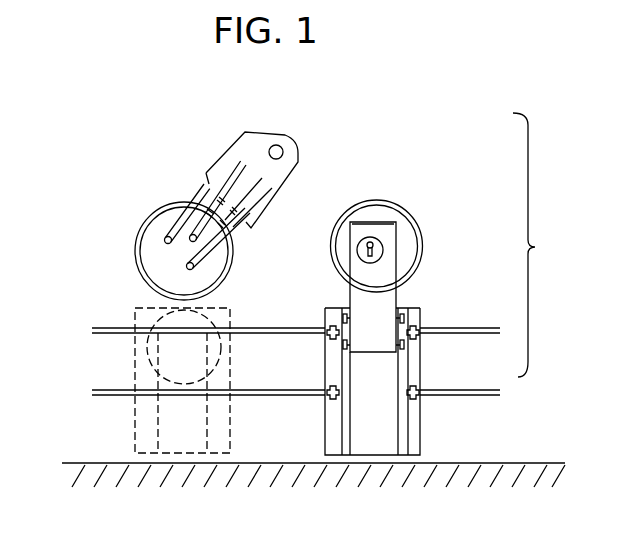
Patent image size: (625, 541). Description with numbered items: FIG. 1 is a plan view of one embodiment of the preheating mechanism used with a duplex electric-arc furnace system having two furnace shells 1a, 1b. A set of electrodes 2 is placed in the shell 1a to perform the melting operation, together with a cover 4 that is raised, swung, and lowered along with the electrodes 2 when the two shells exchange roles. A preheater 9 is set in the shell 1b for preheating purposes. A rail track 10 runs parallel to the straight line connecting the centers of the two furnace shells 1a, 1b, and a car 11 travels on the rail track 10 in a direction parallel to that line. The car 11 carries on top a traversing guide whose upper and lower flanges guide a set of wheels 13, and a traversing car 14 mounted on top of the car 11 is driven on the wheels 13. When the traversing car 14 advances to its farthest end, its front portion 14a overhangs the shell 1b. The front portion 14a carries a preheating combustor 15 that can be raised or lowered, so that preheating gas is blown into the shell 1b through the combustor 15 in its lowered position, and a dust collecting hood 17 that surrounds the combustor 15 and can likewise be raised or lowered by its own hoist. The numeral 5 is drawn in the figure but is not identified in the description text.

The furnace shell 1a is at (163, 207).
The furnace shell 1b is at (357, 207).
The electrodes 2 is at (164, 239).
The cover 4 is at (136, 254).
The key 5 is at (276, 145).
The preheater 9 is at (533, 245).
The rail track 10 is at (278, 327).
The car 11 is at (328, 370).
The wheels 13 is at (404, 348).
The traversing car 14 is at (388, 302).
The front portion 14a is at (385, 230).
The preheating combustor 15 is at (381, 253).
The dust collecting hood 17 is at (377, 216).